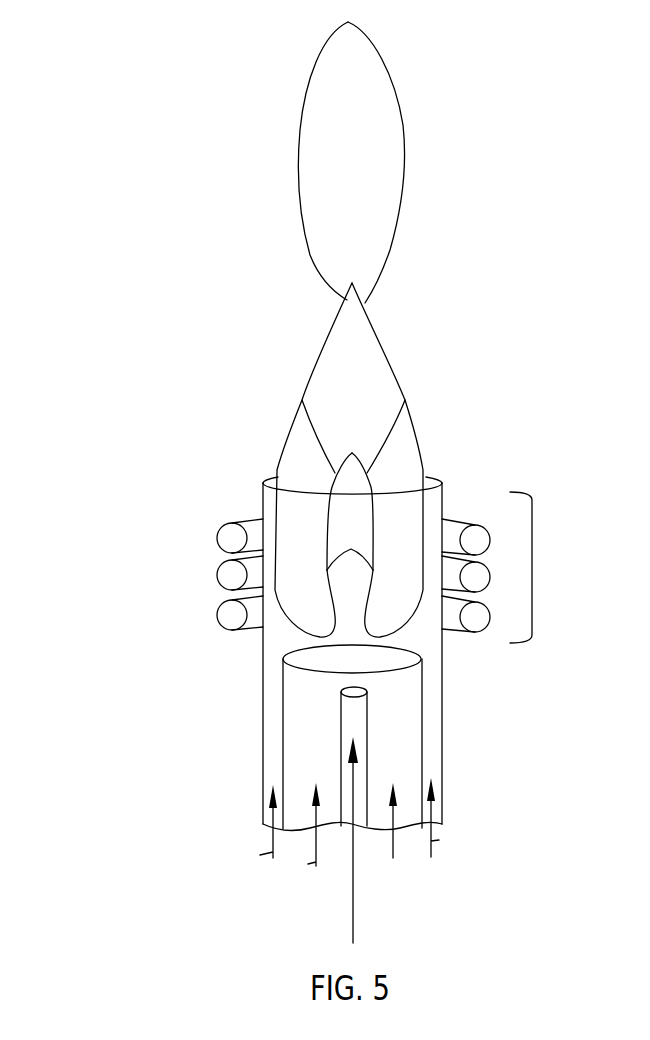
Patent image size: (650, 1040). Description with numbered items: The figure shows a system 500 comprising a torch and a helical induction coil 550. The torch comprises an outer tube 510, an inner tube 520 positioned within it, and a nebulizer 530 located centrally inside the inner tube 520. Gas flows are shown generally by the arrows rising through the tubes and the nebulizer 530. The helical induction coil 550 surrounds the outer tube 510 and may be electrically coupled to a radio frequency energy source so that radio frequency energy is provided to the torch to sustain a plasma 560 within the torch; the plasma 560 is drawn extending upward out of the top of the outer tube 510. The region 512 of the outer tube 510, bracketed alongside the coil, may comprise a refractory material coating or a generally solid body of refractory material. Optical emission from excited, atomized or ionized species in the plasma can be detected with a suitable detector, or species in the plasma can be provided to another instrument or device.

The system 500 is at (170, 350).
The outer tube 510 is at (262, 690).
The region 512 is at (532, 568).
The inner tube 520 is at (430, 690).
The nebulizer 530 is at (341, 716).
The helical induction coil 550 is at (217, 574).
The plasma 560 is at (350, 43).